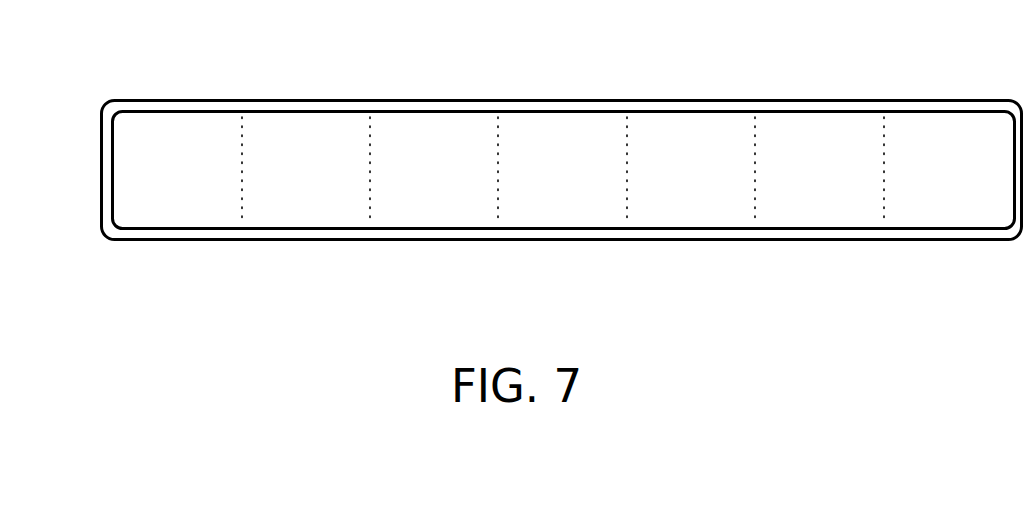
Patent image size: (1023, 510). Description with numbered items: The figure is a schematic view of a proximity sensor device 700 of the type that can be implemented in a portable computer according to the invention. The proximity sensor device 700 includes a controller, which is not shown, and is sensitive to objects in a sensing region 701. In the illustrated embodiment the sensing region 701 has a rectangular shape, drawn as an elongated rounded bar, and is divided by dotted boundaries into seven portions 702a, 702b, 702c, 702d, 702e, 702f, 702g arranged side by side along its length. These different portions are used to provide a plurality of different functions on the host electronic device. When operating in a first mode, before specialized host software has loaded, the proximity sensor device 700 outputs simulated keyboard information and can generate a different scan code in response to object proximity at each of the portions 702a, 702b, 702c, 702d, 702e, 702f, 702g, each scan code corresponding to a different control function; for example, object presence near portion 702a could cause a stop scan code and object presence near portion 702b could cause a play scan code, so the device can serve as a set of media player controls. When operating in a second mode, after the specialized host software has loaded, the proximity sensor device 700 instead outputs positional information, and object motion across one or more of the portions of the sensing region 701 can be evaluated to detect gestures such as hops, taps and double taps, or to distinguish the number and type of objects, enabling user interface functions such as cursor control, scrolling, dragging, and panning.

The proximity sensor device 700 is at (562, 263).
The sensing region 701 is at (194, 228).
The portion 702a is at (178, 118).
The portion 702b is at (295, 118).
The portion 702c is at (440, 118).
The portion 702d is at (577, 118).
The portion 702e is at (698, 122).
The portion 702f is at (831, 118).
The portion 702g is at (948, 122).